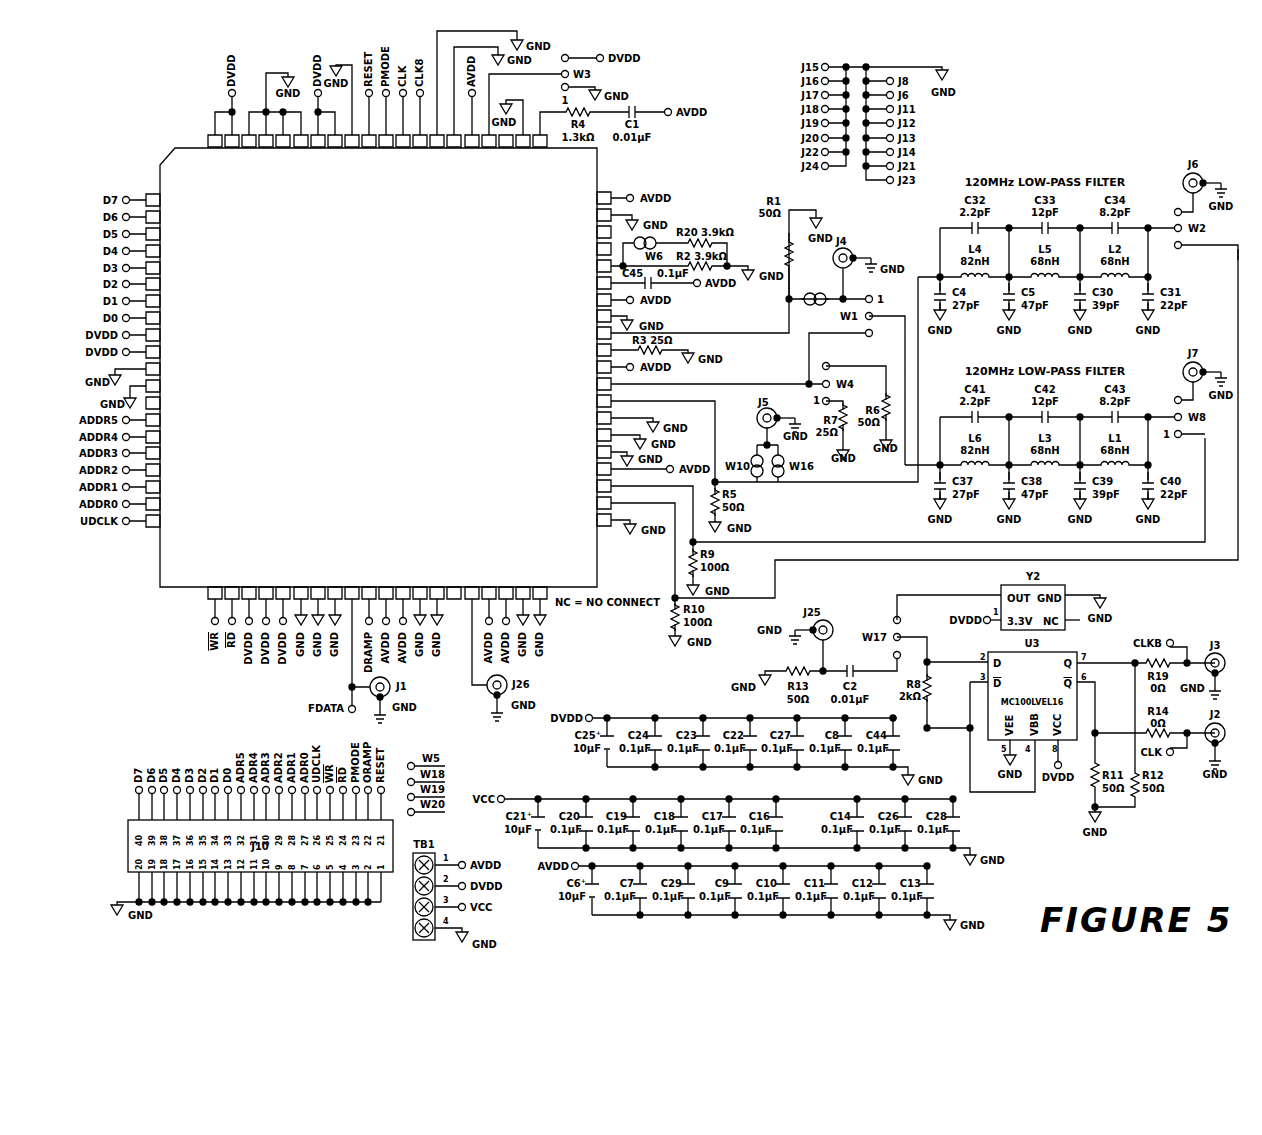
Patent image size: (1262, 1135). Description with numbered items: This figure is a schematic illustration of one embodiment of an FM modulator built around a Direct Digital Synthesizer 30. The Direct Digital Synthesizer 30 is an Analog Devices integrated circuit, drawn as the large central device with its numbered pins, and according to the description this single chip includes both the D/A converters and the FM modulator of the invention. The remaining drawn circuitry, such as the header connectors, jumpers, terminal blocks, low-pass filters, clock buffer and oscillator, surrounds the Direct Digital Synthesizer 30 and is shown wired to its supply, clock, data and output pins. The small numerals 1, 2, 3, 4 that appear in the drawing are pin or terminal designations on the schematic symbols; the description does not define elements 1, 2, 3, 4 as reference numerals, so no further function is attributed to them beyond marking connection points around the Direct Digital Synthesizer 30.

The Direct Digital Synthesizer 30 is at (175, 623).
The filter output jumper terminal 1 is at (1200, 250).
The oscillator Y2 ground pin 2 is at (1085, 596).
The oscillator Y2 output pin 3 is at (948, 605).
The oscillator Y2 NC pin 4 is at (1072, 614).